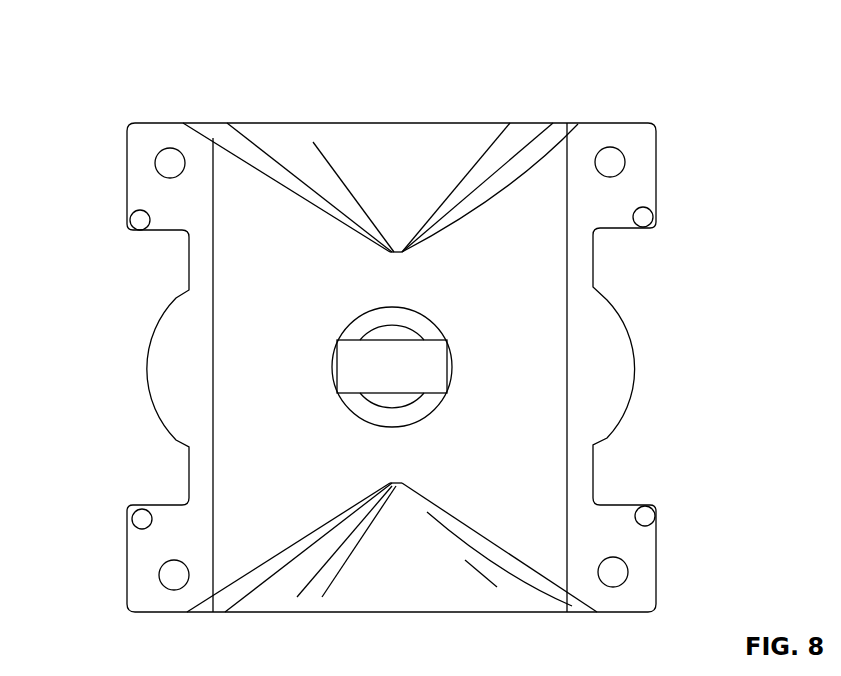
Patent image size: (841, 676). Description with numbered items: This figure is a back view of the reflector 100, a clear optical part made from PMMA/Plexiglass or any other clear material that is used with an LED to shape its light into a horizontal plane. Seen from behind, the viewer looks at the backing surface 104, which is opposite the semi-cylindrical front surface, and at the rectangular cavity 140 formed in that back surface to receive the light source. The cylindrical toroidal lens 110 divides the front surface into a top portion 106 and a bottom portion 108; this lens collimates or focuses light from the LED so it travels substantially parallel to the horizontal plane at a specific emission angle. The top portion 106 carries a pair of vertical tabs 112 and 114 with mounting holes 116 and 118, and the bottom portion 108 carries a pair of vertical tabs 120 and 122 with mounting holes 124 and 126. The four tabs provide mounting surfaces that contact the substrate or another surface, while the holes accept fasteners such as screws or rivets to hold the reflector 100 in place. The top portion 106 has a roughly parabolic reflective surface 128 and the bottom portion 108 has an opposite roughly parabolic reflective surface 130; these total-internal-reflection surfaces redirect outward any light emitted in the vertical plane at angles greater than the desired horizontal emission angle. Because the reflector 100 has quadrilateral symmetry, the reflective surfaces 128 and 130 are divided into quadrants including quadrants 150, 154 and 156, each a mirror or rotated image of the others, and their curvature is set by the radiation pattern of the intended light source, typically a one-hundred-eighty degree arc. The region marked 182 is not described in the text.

The reflector 100 is at (105, 50).
The backing surface 104 is at (555, 177).
The top portion 106 is at (362, 123).
The bottom portion 108 is at (358, 598).
The cylindrical toroidal lens 110 is at (636, 366).
The vertical tab 112 is at (638, 122).
The vertical tab 114 is at (148, 124).
The mounting hole 116 is at (625, 160).
The mounting hole 118 is at (155, 163).
The vertical tab 120 is at (614, 613).
The vertical tab 122 is at (168, 613).
The mounting hole 124 is at (628, 572).
The mounting hole 126 is at (159, 575).
The reflective surface 128 is at (438, 140).
The reflective surface 130 is at (467, 600).
The cavity 140 is at (426, 368).
The quadrant 150 is at (517, 140).
The quadrant 154 is at (547, 558).
The quadrant 156 is at (240, 560).
The recess side surface 182 is at (288, 155).